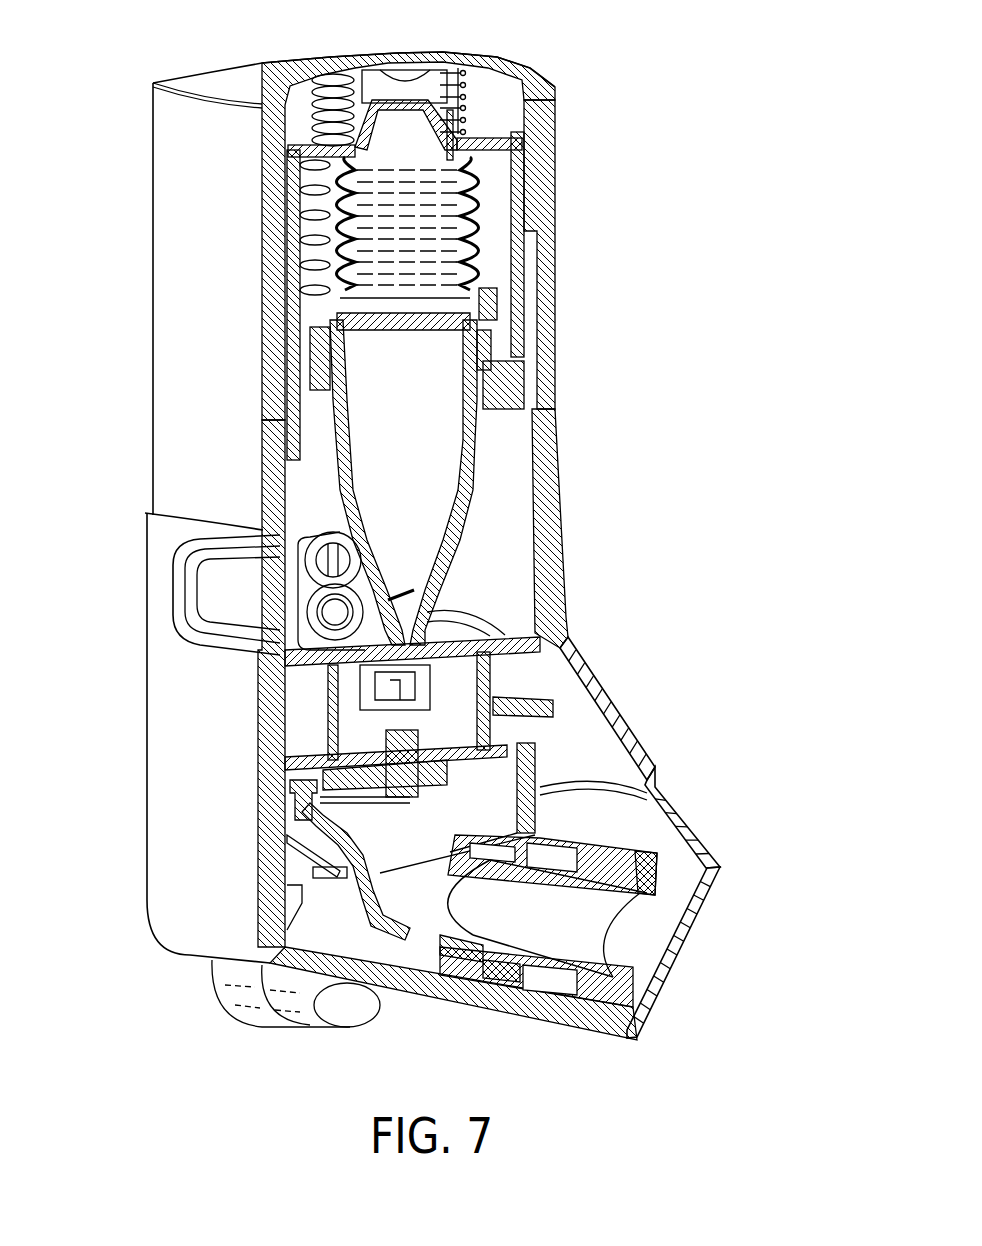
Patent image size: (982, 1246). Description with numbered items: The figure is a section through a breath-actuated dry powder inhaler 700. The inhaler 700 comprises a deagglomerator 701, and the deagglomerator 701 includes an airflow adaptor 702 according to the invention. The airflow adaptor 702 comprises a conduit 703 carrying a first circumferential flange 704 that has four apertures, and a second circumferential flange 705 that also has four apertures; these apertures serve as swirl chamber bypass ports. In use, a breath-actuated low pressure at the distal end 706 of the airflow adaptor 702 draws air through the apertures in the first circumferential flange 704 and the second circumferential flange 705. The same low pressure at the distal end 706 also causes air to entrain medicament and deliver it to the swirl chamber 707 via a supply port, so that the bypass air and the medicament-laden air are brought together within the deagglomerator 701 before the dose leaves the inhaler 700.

The breath-actuated dry powder inhaler 700 is at (385, 33).
The deagglomerator 701 is at (310, 819).
The airflow adaptor 702 is at (633, 850).
The conduit 703 is at (547, 940).
The first circumferential flange 704 is at (623, 990).
The second circumferential flange 705 is at (507, 973).
The distal end 706 is at (647, 888).
The swirl chamber 707 is at (426, 837).